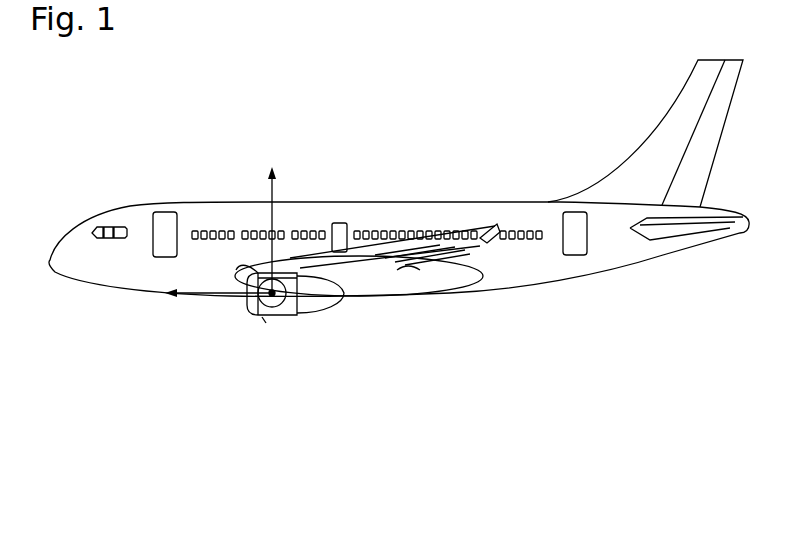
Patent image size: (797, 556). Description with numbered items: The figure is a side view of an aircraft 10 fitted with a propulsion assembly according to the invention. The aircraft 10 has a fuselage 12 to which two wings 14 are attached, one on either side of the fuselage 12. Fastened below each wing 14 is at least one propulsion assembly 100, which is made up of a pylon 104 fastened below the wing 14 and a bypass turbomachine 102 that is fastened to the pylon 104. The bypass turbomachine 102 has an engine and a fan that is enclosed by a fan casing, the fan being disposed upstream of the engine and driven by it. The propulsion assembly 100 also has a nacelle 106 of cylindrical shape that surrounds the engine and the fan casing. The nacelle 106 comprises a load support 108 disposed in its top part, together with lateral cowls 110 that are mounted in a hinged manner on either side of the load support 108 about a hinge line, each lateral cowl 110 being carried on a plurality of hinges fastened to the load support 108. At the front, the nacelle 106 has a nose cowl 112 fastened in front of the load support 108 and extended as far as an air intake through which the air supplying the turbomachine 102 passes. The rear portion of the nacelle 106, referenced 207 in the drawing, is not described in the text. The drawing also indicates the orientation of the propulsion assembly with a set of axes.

The aircraft 10 is at (530, 132).
The fuselage 12 is at (537, 270).
The wing 14 is at (443, 263).
The propulsion assembly 100 is at (255, 353).
The bypass turbomachine 102 is at (269, 405).
The pylon 104 is at (370, 277).
The nacelle 106 is at (300, 318).
The load support 108 is at (260, 270).
The lateral cowl 110 is at (288, 318).
The nose cowl 112 is at (255, 315).
The nozzle 207 is at (343, 303).